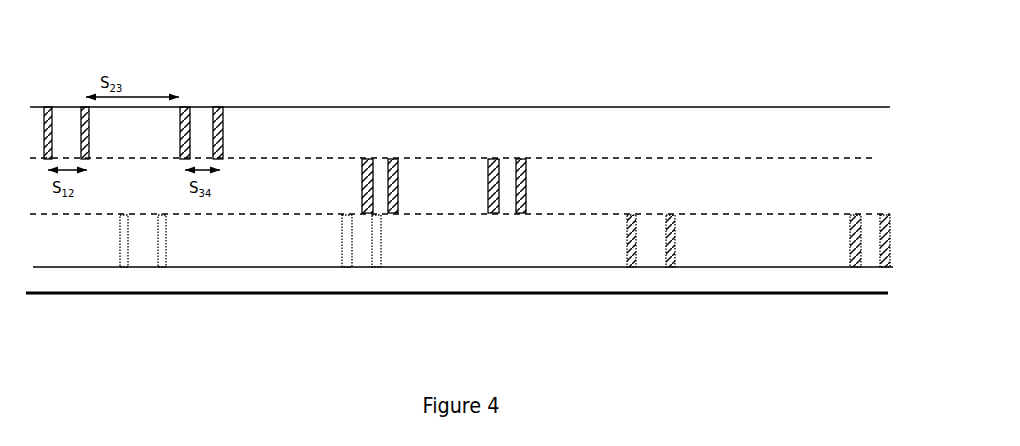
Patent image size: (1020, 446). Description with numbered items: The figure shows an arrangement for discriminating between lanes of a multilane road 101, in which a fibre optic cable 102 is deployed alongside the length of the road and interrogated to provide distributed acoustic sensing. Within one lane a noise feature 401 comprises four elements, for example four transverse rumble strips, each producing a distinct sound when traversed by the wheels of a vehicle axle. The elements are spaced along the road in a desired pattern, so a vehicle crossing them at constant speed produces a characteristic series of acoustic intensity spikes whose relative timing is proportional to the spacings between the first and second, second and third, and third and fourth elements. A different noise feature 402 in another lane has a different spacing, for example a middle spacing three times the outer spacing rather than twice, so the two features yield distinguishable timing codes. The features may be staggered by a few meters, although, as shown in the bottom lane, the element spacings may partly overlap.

The road 101 is at (691, 106).
The fibre optic cable 102 is at (671, 296).
The noise feature 401 is at (219, 76).
The noise feature 402 is at (531, 153).